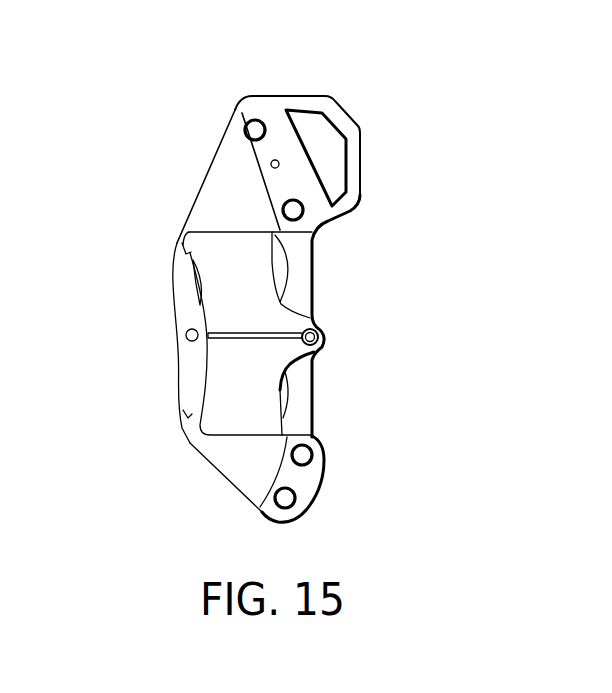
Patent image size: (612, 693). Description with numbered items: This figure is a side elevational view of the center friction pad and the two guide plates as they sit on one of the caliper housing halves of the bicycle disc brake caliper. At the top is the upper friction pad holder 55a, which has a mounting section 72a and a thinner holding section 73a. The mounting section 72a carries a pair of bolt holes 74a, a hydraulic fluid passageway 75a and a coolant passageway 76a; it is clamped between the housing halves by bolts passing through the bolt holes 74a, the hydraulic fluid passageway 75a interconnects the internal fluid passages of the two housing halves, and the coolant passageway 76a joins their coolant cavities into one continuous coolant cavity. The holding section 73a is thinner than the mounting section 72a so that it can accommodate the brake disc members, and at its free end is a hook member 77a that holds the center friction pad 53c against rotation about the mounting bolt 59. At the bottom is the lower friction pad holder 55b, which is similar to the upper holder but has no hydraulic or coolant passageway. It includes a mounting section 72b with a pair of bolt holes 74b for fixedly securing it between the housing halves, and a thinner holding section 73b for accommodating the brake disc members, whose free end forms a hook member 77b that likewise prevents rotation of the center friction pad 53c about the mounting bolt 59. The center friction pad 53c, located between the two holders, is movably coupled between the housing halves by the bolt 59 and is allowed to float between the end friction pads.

The mounting section 72a is at (293, 98).
The mounting section 72b is at (303, 473).
The bolt holes 74a is at (256, 118).
The bolt holes 74b is at (318, 447).
The hydraulic fluid passageway 75a is at (270, 164).
The coolant passageway 76a is at (344, 167).
The holding section 73a is at (258, 199).
The holding section 73b is at (240, 475).
The upper friction pad holder 55a is at (186, 218).
The lower friction pad holder 55b is at (207, 461).
The hook member 77a is at (178, 260).
The hook member 77b is at (182, 411).
The center friction pad 53c is at (278, 292).
The bolt 59 is at (319, 335).